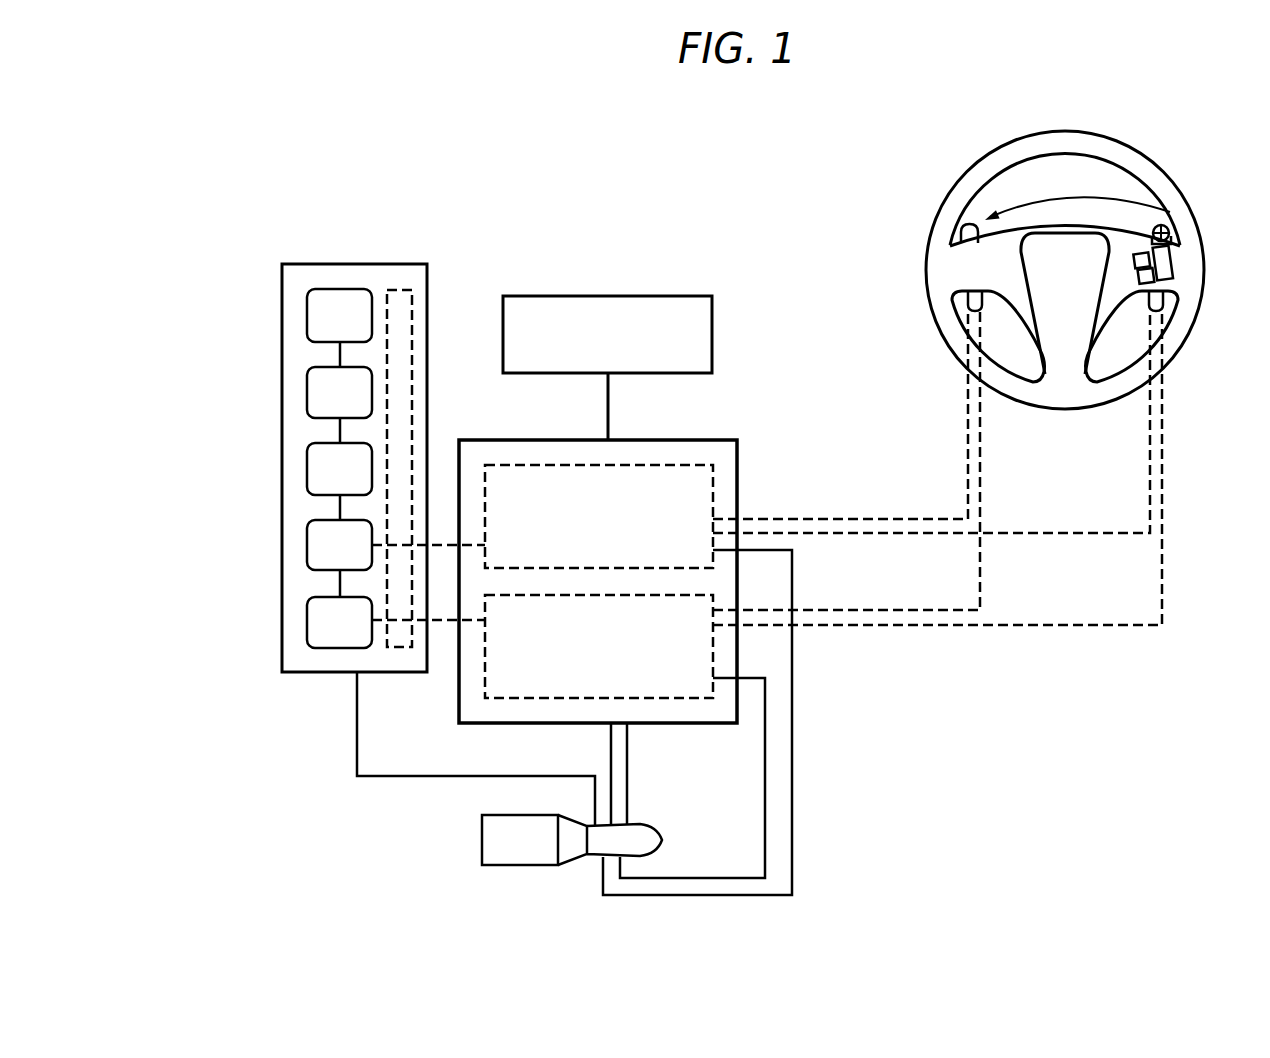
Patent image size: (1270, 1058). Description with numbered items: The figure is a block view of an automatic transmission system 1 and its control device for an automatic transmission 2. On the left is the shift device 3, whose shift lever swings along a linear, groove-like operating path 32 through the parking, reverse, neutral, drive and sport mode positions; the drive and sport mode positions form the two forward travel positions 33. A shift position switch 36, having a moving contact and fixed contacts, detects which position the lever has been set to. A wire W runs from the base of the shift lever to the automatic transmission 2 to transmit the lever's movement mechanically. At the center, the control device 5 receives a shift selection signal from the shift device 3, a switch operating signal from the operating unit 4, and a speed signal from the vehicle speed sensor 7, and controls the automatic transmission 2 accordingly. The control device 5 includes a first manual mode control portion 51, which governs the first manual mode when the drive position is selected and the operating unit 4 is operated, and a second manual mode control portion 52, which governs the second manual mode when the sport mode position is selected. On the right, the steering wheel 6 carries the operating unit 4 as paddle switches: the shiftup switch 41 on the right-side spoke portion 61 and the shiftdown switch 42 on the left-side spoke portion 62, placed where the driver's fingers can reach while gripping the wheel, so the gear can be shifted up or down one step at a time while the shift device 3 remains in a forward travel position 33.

The automatic transmission system 1 is at (715, 203).
The automatic transmission 2 is at (528, 866).
The shift device 3 is at (413, 238).
The operating path 32 is at (338, 428).
The forward travel positions 33 is at (308, 618).
The shift position switch 36 is at (412, 348).
The operating unit 4 is at (1165, 213).
The shiftup switch 41 is at (1166, 296).
The shiftdown switch 42 is at (966, 295).
The control device 5 is at (706, 428).
The first manual mode control portion 51 is at (588, 465).
The second manual mode control portion 52 is at (668, 698).
The steering wheel 6 is at (1148, 160).
The right-side spoke portion 61 is at (1178, 242).
The left-side spoke portion 62 is at (960, 245).
The vehicle speed sensor 7 is at (657, 295).
The wire W is at (428, 777).